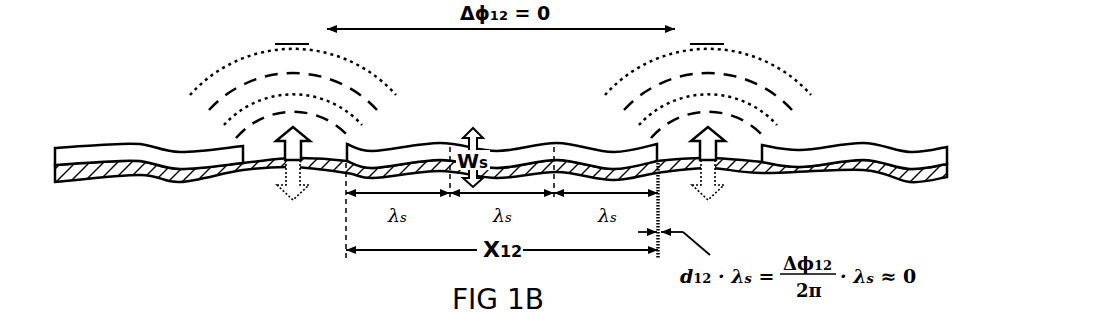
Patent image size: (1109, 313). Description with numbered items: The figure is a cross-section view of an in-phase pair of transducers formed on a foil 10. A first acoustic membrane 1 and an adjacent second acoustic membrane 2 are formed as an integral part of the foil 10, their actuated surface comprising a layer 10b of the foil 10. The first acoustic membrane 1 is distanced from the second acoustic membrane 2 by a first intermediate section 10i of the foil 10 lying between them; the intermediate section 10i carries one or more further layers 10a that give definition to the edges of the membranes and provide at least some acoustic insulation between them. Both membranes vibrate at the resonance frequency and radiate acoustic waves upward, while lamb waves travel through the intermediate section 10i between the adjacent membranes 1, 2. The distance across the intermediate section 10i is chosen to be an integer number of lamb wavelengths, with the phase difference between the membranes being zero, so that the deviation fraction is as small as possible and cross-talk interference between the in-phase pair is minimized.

The foil 10 is at (120, 128).
The further layer 10a is at (907, 159).
The layer of the foil 10b is at (907, 175).
The first intermediate section 10i is at (535, 135).
The first acoustic membrane 1 is at (262, 178).
The second acoustic membrane 2 is at (735, 175).